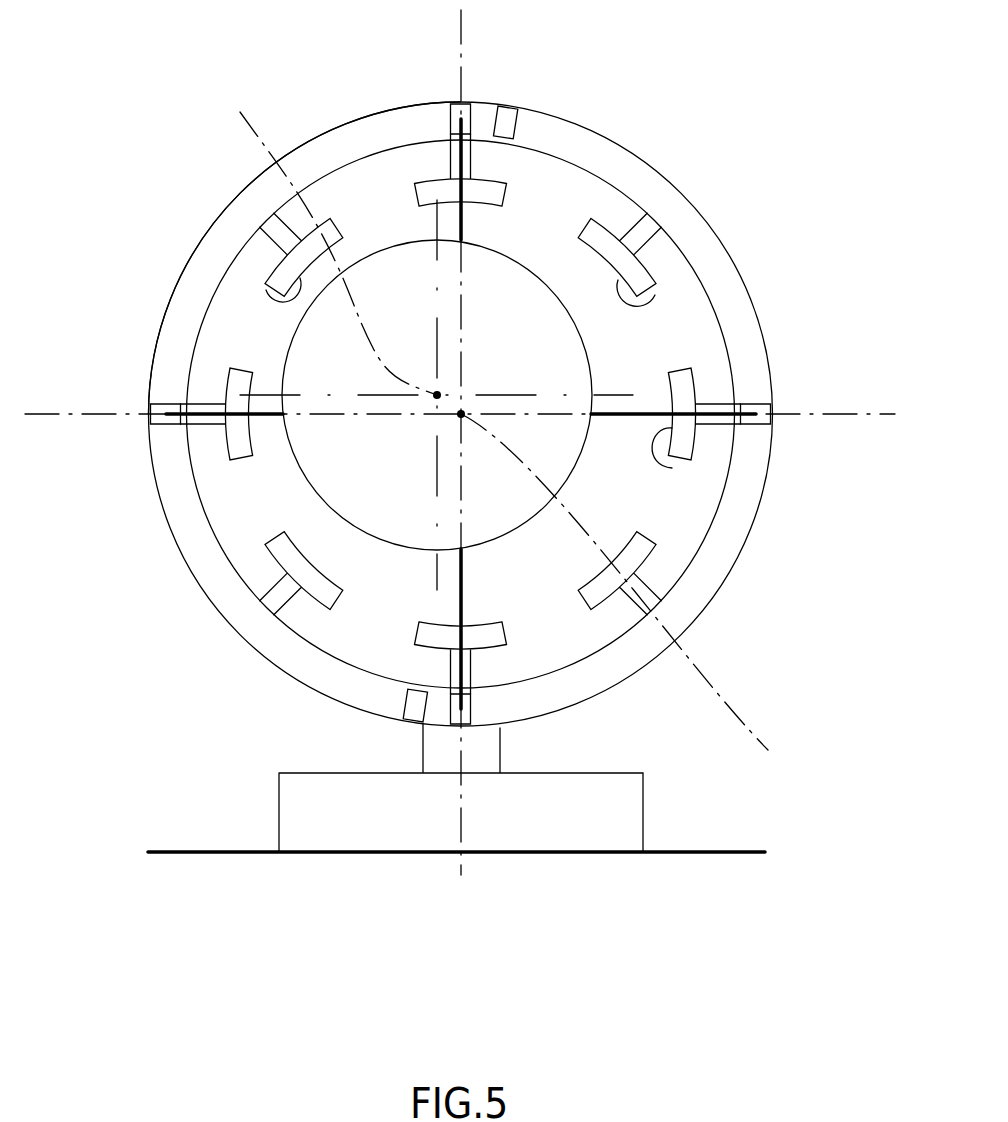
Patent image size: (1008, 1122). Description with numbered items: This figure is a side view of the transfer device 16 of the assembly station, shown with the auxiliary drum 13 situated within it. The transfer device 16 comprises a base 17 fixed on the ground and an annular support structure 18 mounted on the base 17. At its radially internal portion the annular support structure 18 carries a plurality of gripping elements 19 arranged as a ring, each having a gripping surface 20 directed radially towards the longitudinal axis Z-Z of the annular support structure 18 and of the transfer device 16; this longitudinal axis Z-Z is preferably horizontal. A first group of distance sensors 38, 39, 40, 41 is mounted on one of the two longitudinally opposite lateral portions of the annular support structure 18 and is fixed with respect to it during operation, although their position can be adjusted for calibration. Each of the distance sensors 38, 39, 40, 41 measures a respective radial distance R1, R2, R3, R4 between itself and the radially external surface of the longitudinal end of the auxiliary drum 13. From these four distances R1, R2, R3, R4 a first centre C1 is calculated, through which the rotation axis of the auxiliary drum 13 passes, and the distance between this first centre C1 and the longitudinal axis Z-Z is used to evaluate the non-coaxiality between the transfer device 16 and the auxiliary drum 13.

The auxiliary drum 13 is at (519, 250).
The transfer device 16 is at (700, 165).
The base 17 is at (278, 813).
The annular support structure 18 is at (168, 300).
The gripping elements 19 is at (428, 168).
The gripping surfaces 20 is at (272, 292).
The distance sensor 38 is at (452, 108).
The distance sensor 39 is at (150, 425).
The distance sensor 40 is at (470, 707).
The distance sensor 41 is at (760, 420).
The radial distance R1 is at (462, 189).
The radial distance R2 is at (185, 405).
The radial distance R3 is at (461, 616).
The radial distance R4 is at (712, 410).
The first centre C1 is at (326, 240).
The longitudinal axis Z-Z is at (636, 598).